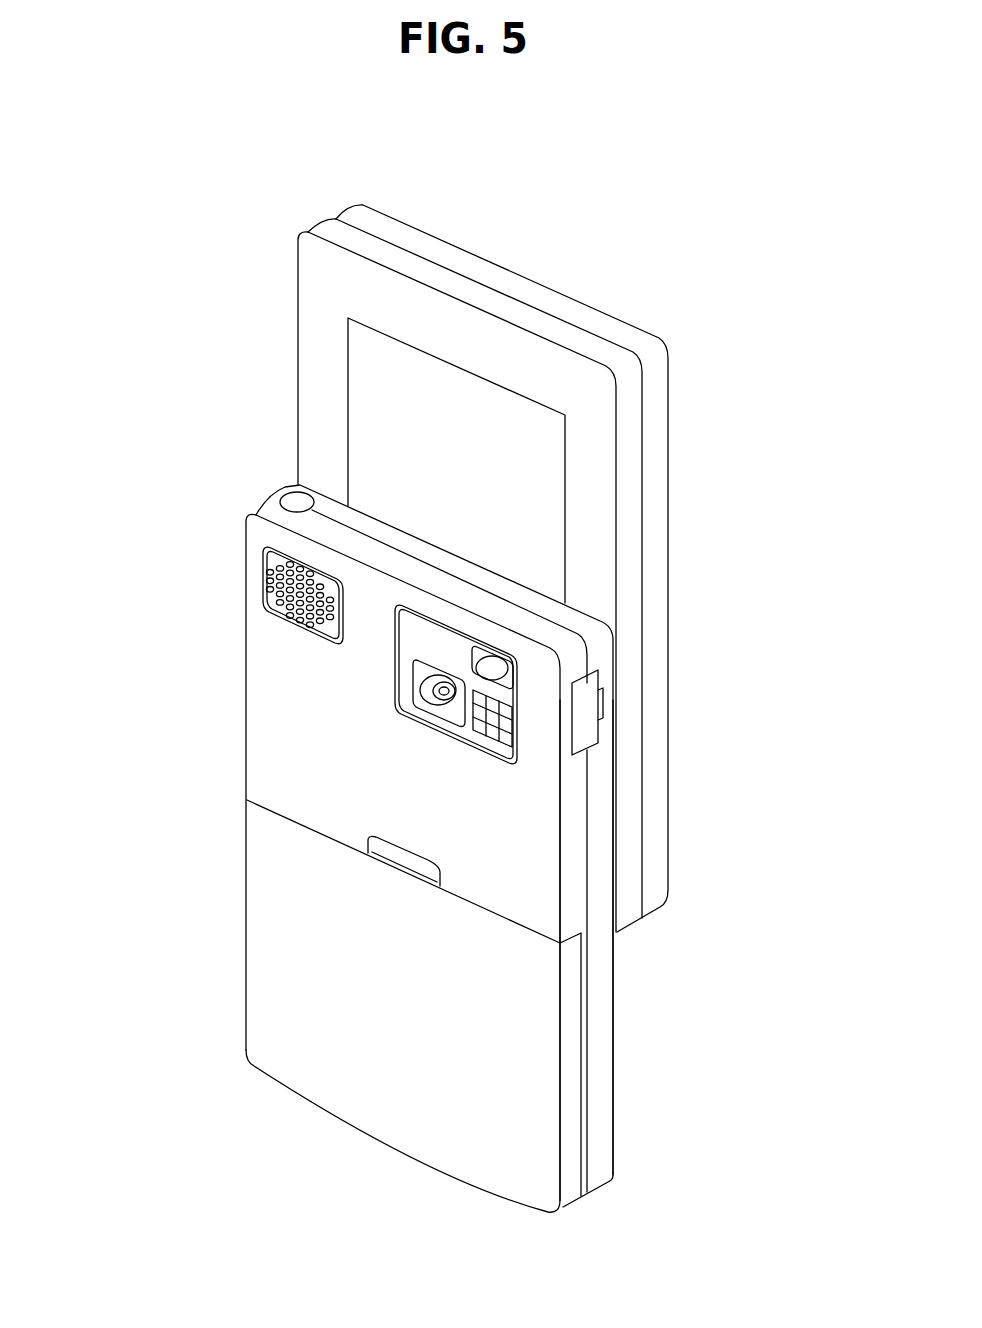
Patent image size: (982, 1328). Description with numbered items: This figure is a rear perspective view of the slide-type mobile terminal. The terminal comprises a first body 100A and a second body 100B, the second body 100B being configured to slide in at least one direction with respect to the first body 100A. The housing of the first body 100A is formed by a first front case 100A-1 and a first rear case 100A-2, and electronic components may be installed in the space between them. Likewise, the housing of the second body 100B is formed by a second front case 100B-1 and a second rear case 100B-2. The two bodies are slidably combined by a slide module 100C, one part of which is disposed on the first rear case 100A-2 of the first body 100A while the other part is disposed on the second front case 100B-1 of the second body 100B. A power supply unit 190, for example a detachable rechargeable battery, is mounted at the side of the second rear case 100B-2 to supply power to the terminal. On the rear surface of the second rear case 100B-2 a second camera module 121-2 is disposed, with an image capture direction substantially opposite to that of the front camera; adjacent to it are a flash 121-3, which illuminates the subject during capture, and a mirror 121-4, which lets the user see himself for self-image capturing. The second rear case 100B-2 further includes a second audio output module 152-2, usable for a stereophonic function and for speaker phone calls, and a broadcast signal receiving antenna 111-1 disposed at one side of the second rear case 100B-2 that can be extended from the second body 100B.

The first body 100A is at (394, 537).
The first front case 100A-1 is at (350, 212).
The first rear case 100A-2 is at (332, 227).
The slide module 100C is at (348, 441).
The second body 100B is at (451, 831).
The second front case 100B-1 is at (605, 962).
The second rear case 100B-2 is at (575, 898).
The broadcast signal receiving antenna 111-1 is at (290, 501).
The second audio output module 152-2 is at (262, 587).
The second camera module 121-2 is at (443, 693).
The flash 121-3 is at (490, 724).
The mirror 121-4 is at (492, 668).
The power supply unit 190 is at (267, 893).